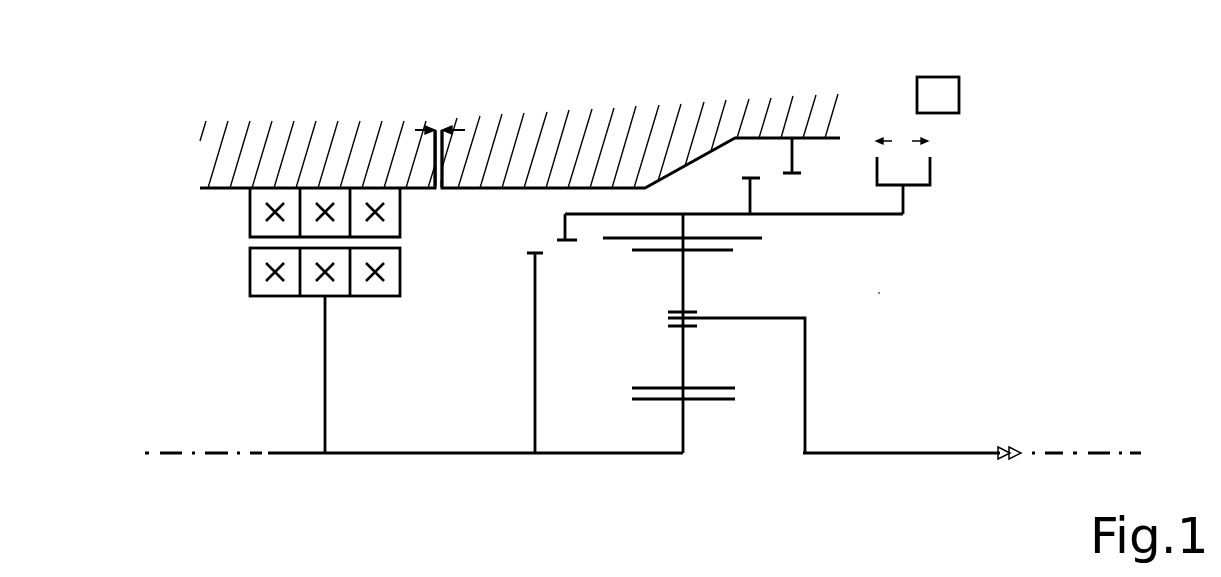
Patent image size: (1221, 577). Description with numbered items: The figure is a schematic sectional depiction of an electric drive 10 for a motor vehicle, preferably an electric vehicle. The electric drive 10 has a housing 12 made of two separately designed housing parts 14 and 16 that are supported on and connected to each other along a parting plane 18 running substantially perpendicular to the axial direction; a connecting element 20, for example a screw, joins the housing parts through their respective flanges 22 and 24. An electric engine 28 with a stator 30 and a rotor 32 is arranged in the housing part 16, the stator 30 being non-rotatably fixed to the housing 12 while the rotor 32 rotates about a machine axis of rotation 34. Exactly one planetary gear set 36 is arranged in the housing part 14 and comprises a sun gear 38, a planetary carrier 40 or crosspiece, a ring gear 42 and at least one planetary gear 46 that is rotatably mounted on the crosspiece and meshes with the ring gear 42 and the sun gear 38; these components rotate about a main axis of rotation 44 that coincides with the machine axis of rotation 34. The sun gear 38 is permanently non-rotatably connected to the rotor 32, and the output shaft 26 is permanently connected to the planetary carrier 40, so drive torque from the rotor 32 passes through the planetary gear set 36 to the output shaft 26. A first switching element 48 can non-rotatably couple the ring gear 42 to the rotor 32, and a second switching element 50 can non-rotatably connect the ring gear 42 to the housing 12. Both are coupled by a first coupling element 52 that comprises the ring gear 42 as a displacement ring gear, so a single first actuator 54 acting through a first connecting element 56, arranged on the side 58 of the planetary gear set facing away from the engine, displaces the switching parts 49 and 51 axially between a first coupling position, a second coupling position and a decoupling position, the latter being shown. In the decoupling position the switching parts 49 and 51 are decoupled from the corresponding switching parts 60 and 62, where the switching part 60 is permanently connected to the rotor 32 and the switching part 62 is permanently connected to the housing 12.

The electric drive 10 is at (880, 78).
The housing 12 is at (216, 158).
The housing part 14 is at (615, 132).
The housing part 16 is at (278, 130).
The parting plane 18 is at (444, 166).
The connecting element 20 is at (440, 130).
The flange 22 is at (450, 178).
The flange 24 is at (434, 128).
The output shaft 26 is at (913, 457).
The electric engine 28 is at (222, 275).
The stator 30 is at (400, 214).
The rotor 32 is at (400, 272).
The machine axis of rotation 34 is at (222, 455).
The planetary gear set 36 is at (654, 460).
The sun gear 38 is at (683, 437).
The planetary carrier 40 is at (805, 365).
The ring gear 42 is at (752, 239).
The main axis of rotation 44 is at (1058, 457).
The planetary gear 46 is at (685, 286).
The first switching element 48 is at (567, 258).
The switching part 49 is at (572, 240).
The second switching element 50 is at (779, 192).
The switching part 51 is at (745, 196).
The first coupling element 52 is at (882, 217).
The first actuator 54 is at (959, 95).
The first connecting element 56 is at (930, 170).
The side 58 is at (878, 293).
The switching part 60 is at (527, 261).
The switching part 62 is at (802, 173).